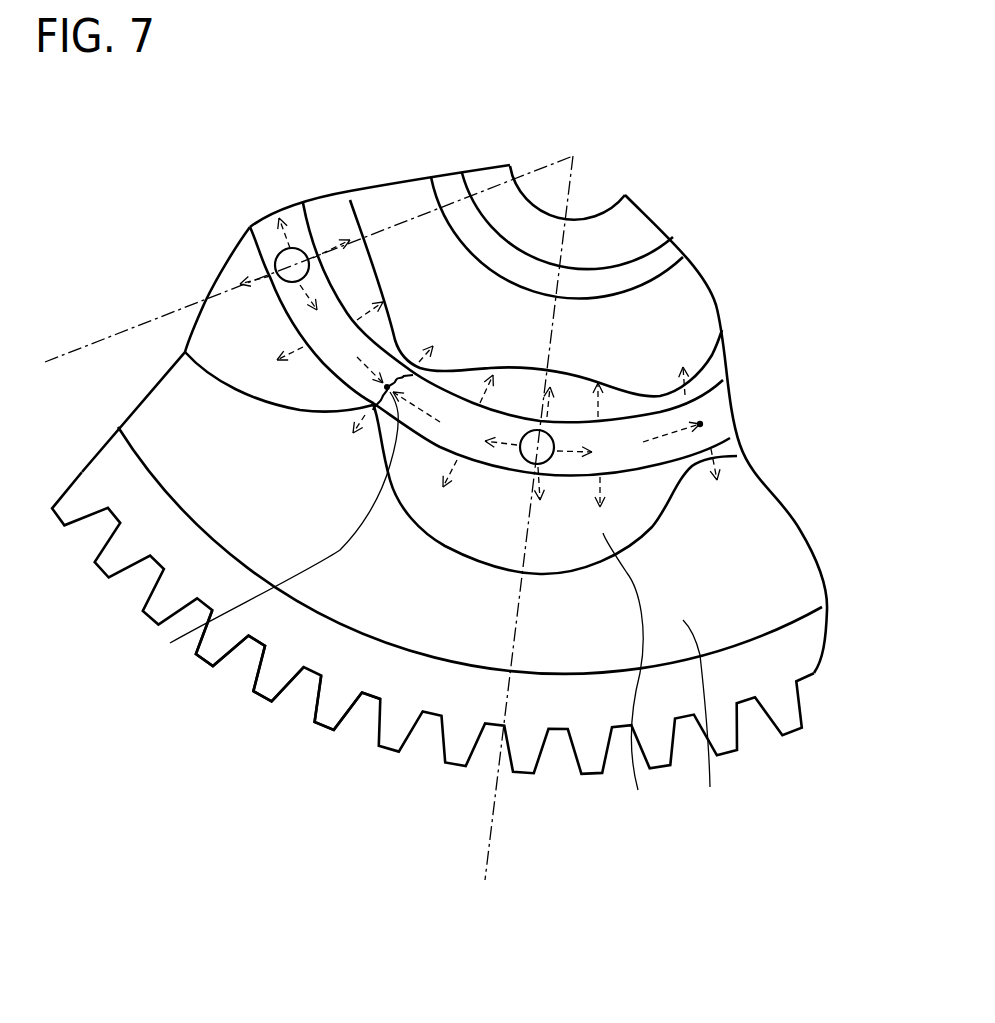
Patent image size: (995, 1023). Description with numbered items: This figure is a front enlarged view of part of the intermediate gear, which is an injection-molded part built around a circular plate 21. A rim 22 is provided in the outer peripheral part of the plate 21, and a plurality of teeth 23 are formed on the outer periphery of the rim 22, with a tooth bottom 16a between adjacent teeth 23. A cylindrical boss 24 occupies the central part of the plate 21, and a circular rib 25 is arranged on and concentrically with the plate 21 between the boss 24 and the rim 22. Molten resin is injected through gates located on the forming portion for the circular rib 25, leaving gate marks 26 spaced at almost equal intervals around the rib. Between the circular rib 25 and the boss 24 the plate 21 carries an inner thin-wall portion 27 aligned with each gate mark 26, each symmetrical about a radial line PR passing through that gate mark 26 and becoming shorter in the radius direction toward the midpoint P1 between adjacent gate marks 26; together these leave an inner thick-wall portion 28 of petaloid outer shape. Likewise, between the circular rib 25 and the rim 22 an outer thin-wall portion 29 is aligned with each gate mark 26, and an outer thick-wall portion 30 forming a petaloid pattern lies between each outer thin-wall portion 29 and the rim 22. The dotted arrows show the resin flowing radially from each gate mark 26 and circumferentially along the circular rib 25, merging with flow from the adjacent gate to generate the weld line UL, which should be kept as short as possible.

The circular plate 21 is at (430, 717).
The rim 22 is at (137, 507).
The teeth 23 is at (258, 693).
The tooth bottom 16a is at (347, 717).
The cylindrical boss 24 is at (660, 257).
The circular rib 25 is at (713, 403).
The gate mark 26 is at (275, 250).
The inner thin-wall portion 27 is at (610, 397).
The inner thick-wall portion 28 is at (690, 300).
The outer thin-wall portion 29 is at (629, 675).
The outer thick-wall portion 30 is at (707, 716).
The radial line PR is at (112, 337).
The midpoint P1 is at (383, 398).
The weld line UL is at (268, 528).